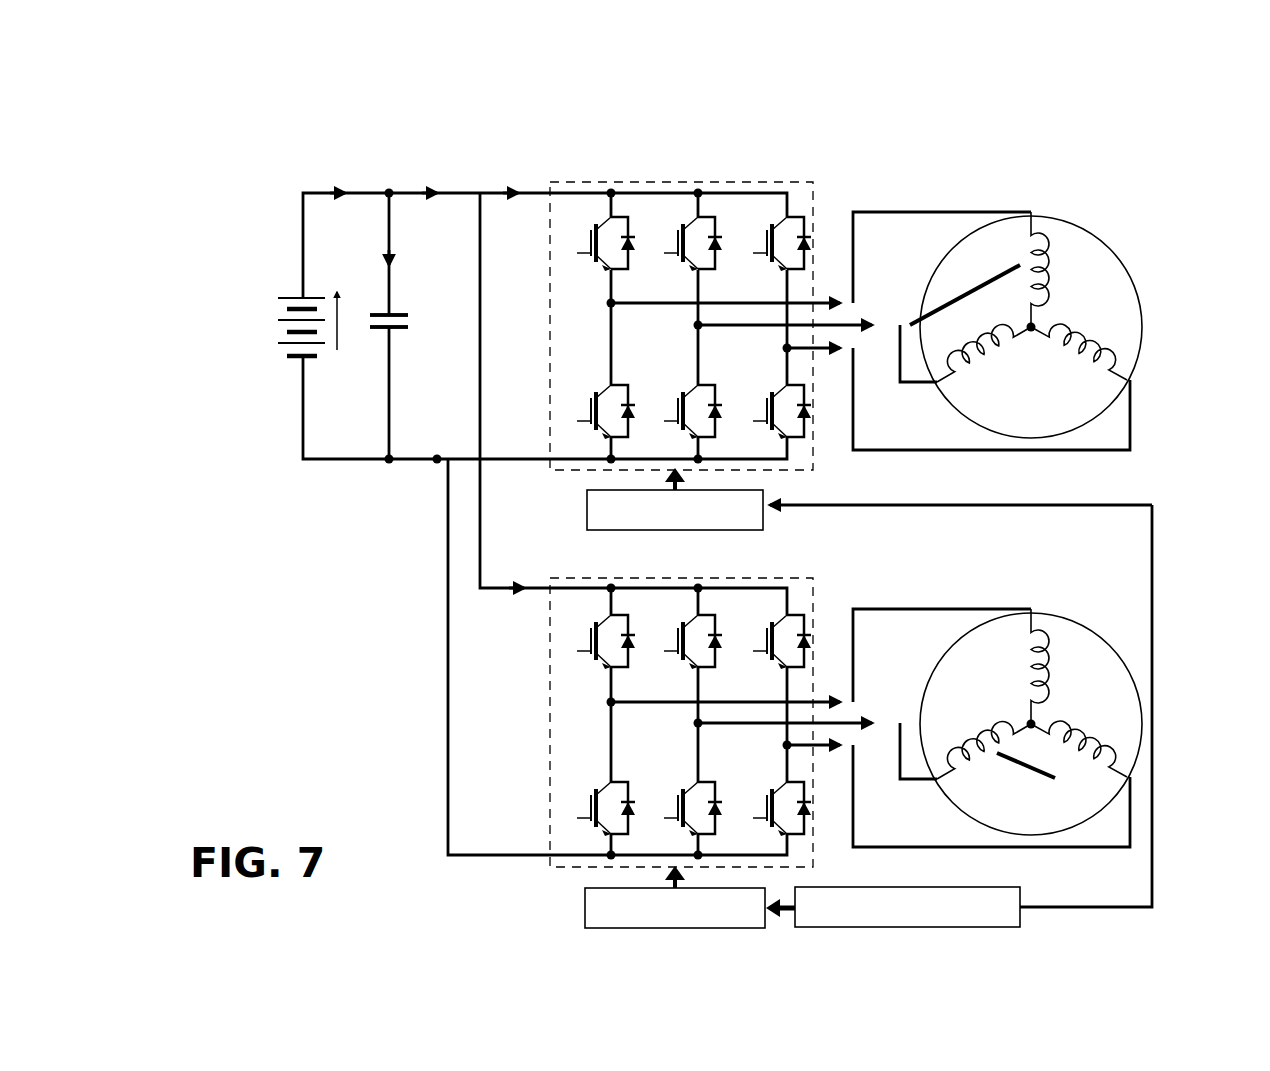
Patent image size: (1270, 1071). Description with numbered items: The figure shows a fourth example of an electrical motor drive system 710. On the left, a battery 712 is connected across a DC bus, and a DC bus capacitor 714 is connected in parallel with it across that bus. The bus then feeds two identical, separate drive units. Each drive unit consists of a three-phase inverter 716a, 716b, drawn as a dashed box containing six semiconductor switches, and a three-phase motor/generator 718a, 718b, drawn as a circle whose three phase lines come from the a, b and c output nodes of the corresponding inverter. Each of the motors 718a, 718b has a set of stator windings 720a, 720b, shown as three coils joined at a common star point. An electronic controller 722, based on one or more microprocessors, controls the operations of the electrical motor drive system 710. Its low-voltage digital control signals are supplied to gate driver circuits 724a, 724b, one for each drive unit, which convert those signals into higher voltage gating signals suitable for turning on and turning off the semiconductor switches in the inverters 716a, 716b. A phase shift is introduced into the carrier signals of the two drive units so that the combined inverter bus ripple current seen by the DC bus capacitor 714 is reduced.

The electrical motor drive system 710 is at (707, 526).
The battery 712 is at (288, 300).
The DC bus capacitor 714 is at (377, 336).
The three-phase inverter 716a is at (800, 184).
The three-phase inverter 716b is at (800, 580).
The three-phase motor/generator 718a is at (1062, 218).
The three-phase motor/generator 718b is at (1112, 655).
The stator windings 720a is at (1097, 352).
The stator windings 720b is at (1100, 752).
The electronic controller 722 is at (1015, 928).
The gate driver circuit 724a is at (587, 503).
The gate driver circuit 724b is at (585, 902).